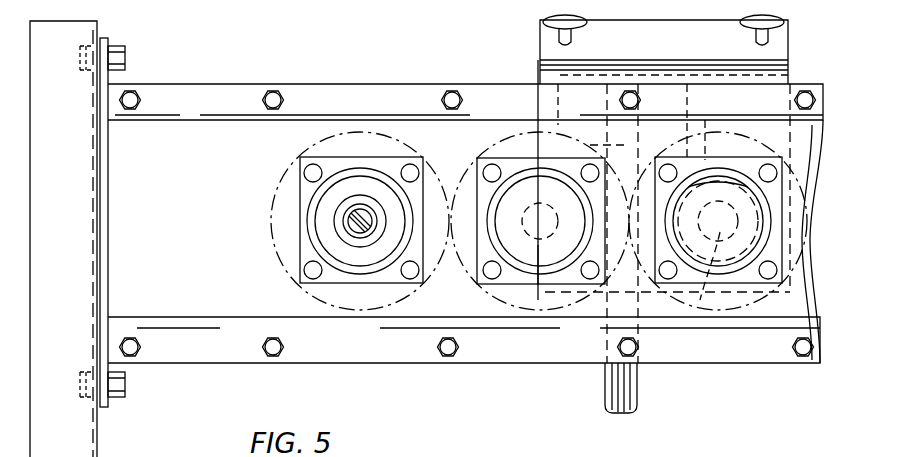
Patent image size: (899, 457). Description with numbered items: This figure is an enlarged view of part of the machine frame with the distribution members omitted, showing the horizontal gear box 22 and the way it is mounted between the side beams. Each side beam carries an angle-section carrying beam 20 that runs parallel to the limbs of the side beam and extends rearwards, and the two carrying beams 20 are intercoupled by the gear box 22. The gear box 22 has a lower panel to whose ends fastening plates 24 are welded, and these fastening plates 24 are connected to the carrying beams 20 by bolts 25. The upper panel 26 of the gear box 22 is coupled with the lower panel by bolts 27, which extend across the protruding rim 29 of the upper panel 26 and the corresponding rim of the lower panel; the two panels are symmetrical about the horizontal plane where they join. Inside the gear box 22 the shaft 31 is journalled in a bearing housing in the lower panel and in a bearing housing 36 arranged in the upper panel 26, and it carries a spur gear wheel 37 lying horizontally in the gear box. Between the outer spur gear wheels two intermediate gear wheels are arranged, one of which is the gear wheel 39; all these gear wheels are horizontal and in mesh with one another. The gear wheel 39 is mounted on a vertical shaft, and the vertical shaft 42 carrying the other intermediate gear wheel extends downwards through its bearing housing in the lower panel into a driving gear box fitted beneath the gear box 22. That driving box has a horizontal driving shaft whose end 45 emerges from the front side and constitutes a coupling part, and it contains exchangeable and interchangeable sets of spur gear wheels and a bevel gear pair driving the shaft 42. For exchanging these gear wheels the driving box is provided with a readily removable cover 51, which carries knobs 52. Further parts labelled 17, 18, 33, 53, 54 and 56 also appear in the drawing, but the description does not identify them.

The hook portion 17 is at (786, 80).
The hook end 18 is at (776, 152).
The carrying beam 20 is at (62, 300).
The gear box 22 is at (212, 158).
The fastening plates 24 is at (108, 216).
The bolts 25 is at (125, 60).
The upper panel 26 is at (220, 300).
The bolts 27 is at (452, 90).
The protruding rim 29 is at (345, 84).
The shaft 31 is at (348, 222).
The bore 33 is at (522, 215).
The bearing housing 36 is at (330, 240).
The spur gear wheel 37 is at (282, 190).
The gear wheel 39 is at (457, 270).
The vertical shaft 42 is at (700, 300).
The end of driving shaft 45 is at (605, 392).
The removable cover 51 is at (548, 46).
The knobs 52 is at (760, 30).
The clamp plate 53 is at (530, 76).
The guide slot 54 is at (596, 144).
The guide rod 56 is at (533, 112).